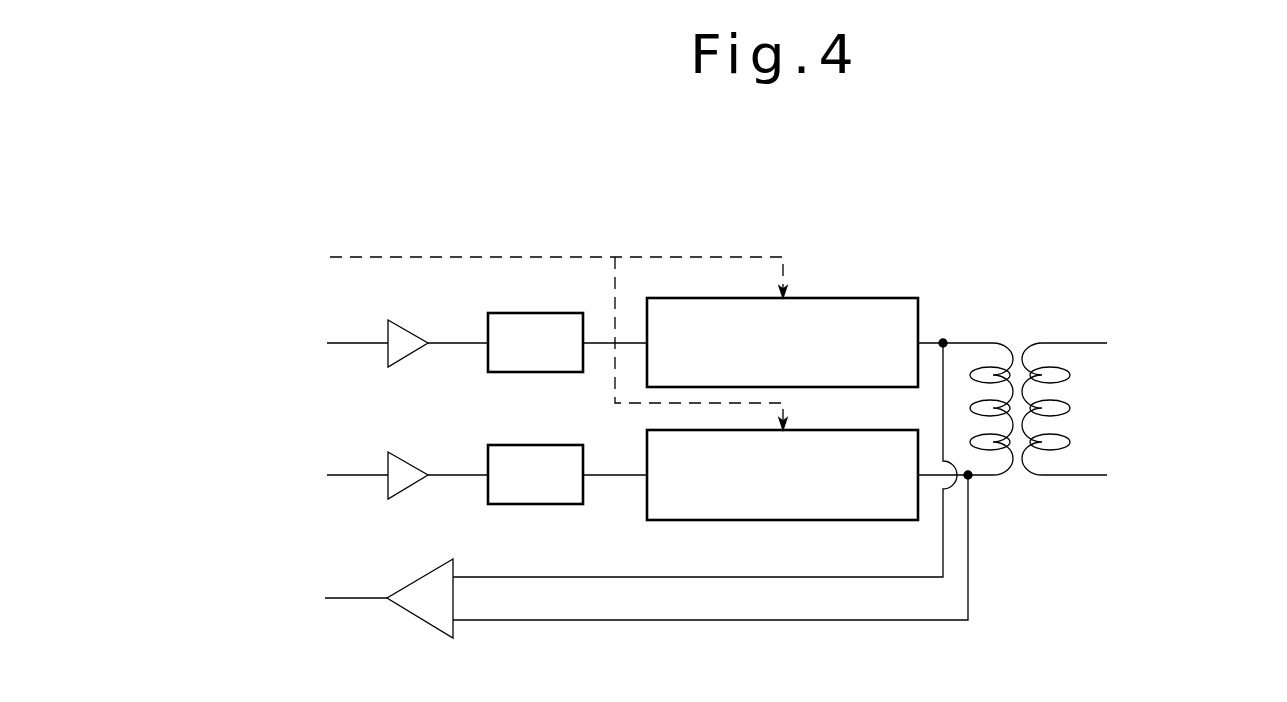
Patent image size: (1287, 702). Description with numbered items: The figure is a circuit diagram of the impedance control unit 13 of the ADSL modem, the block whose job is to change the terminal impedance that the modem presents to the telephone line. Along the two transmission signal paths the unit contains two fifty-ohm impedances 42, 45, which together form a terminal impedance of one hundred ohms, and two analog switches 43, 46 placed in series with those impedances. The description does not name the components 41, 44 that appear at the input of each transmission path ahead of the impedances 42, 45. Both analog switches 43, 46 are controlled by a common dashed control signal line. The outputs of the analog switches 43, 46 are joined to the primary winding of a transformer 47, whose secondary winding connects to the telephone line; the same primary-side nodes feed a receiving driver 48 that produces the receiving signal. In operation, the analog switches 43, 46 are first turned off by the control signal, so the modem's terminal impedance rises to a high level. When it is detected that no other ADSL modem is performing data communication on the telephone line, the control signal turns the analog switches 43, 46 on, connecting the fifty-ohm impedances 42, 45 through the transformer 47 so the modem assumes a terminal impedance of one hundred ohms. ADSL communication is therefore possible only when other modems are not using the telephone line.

The impedance control unit 13 is at (700, 212).
The amplifier 41 is at (414, 320).
The 50Ω impedance 42 is at (505, 313).
The analog switch 43 is at (845, 298).
The amplifier 44 is at (414, 452).
The 50Ω impedance 45 is at (530, 445).
The analog switch 46 is at (820, 430).
The transformer 47 is at (1015, 340).
The receiving driver 48 is at (420, 578).